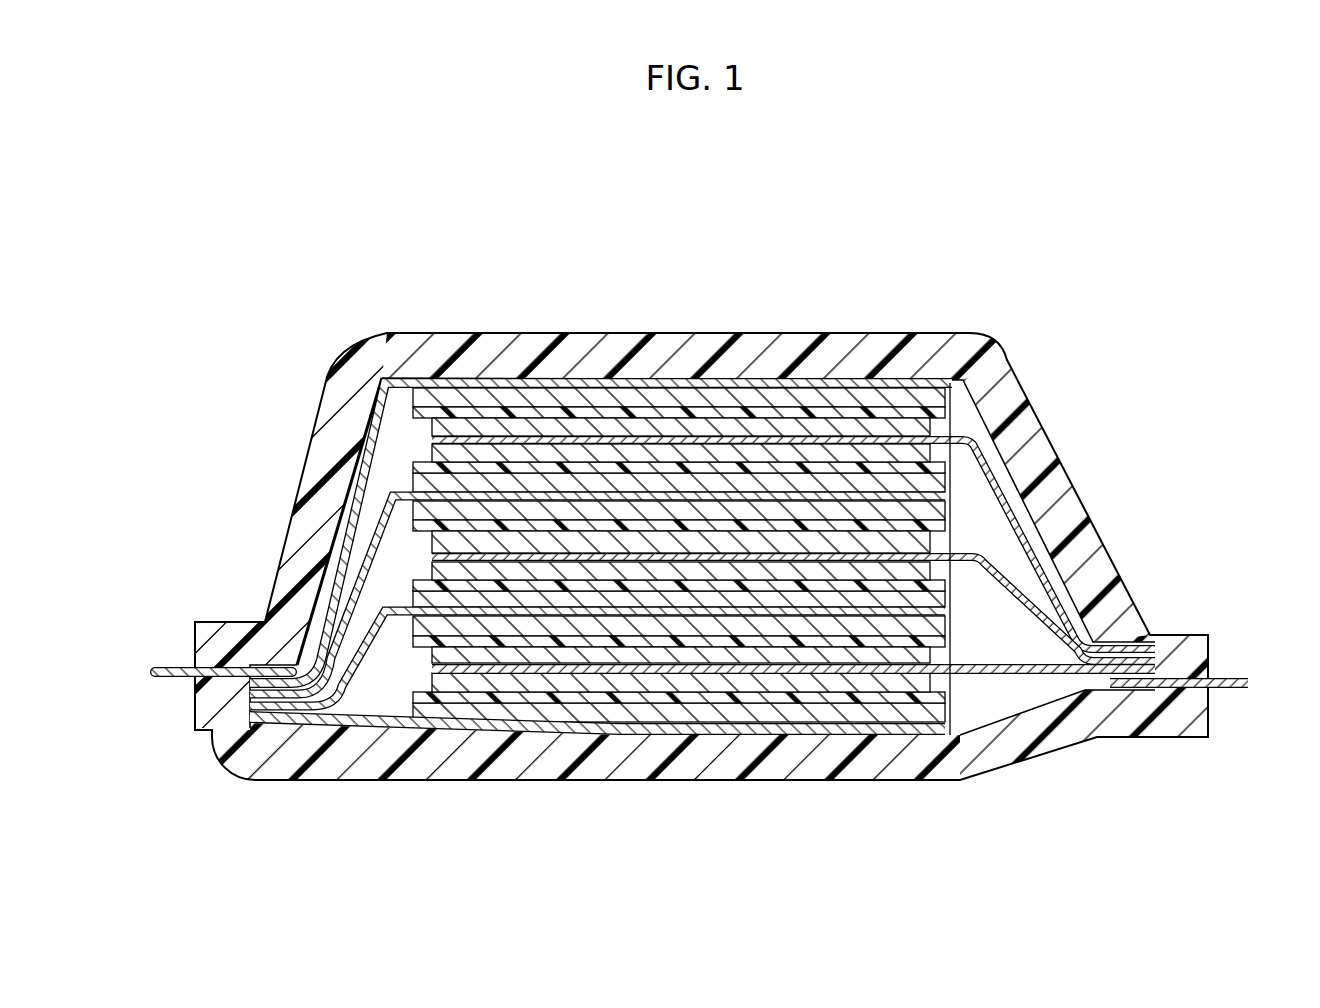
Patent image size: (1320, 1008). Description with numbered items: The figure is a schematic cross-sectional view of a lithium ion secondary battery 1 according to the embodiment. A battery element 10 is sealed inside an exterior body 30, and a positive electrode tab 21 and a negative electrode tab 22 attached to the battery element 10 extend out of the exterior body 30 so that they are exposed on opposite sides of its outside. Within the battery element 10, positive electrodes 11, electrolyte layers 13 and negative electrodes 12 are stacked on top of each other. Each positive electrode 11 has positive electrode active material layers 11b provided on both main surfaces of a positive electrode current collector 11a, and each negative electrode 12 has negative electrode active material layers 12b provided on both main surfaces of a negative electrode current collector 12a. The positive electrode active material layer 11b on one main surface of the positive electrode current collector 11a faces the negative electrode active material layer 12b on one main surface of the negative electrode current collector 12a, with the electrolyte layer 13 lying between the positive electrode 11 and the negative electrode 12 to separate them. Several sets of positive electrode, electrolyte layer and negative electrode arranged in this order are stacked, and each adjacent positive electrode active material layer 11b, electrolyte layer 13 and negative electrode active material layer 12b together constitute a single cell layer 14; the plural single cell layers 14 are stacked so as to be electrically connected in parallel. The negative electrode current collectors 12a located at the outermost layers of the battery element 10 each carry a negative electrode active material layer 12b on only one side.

The lithium ion secondary battery 1 is at (288, 309).
The battery element 10 is at (689, 534).
The positive electrode 11 is at (793, 457).
The positive electrode current collector 11a is at (692, 440).
The positive electrode active material layer 11b is at (580, 428).
The negative electrode 12 is at (588, 534).
The negative electrode current collector 12a is at (852, 500).
The negative electrode active material layer 12b is at (478, 397).
The electrolyte layer 13 is at (530, 413).
The single cell layer 14 is at (600, 270).
The positive electrode tab 21 is at (1228, 678).
The negative electrode tab 22 is at (176, 666).
The exterior body 30 is at (1188, 634).